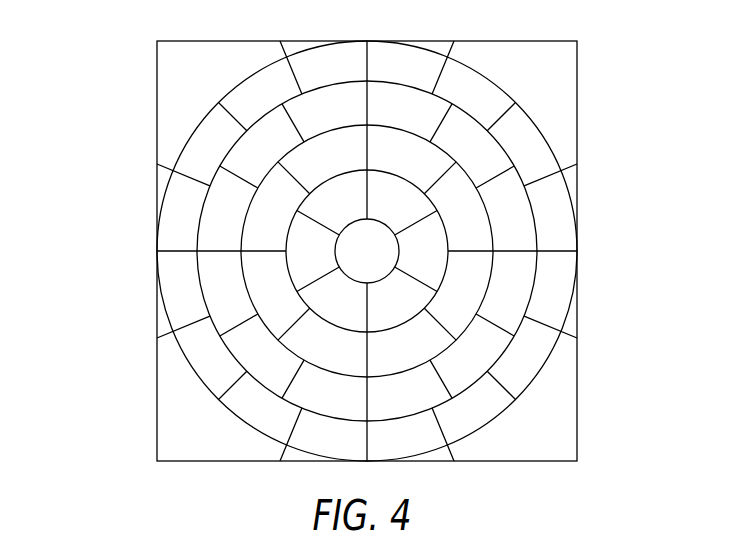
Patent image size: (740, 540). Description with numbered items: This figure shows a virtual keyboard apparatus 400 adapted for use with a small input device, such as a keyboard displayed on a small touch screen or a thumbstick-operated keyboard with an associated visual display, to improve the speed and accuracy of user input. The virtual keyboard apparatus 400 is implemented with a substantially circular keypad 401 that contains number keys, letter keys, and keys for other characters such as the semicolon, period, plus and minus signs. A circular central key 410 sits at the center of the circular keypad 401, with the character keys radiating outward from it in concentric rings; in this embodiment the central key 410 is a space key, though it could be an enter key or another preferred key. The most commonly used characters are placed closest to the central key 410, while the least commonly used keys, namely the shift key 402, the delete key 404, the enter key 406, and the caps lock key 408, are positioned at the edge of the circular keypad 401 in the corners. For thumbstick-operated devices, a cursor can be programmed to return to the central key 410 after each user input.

The virtual keyboard apparatus 400 is at (543, 29).
The circular keypad 401 is at (170, 142).
The shift key 402 is at (168, 107).
The delete key 404 is at (558, 107).
The enter key 406 is at (558, 407).
The caps lock key 408 is at (168, 392).
The central key 410 is at (352, 262).